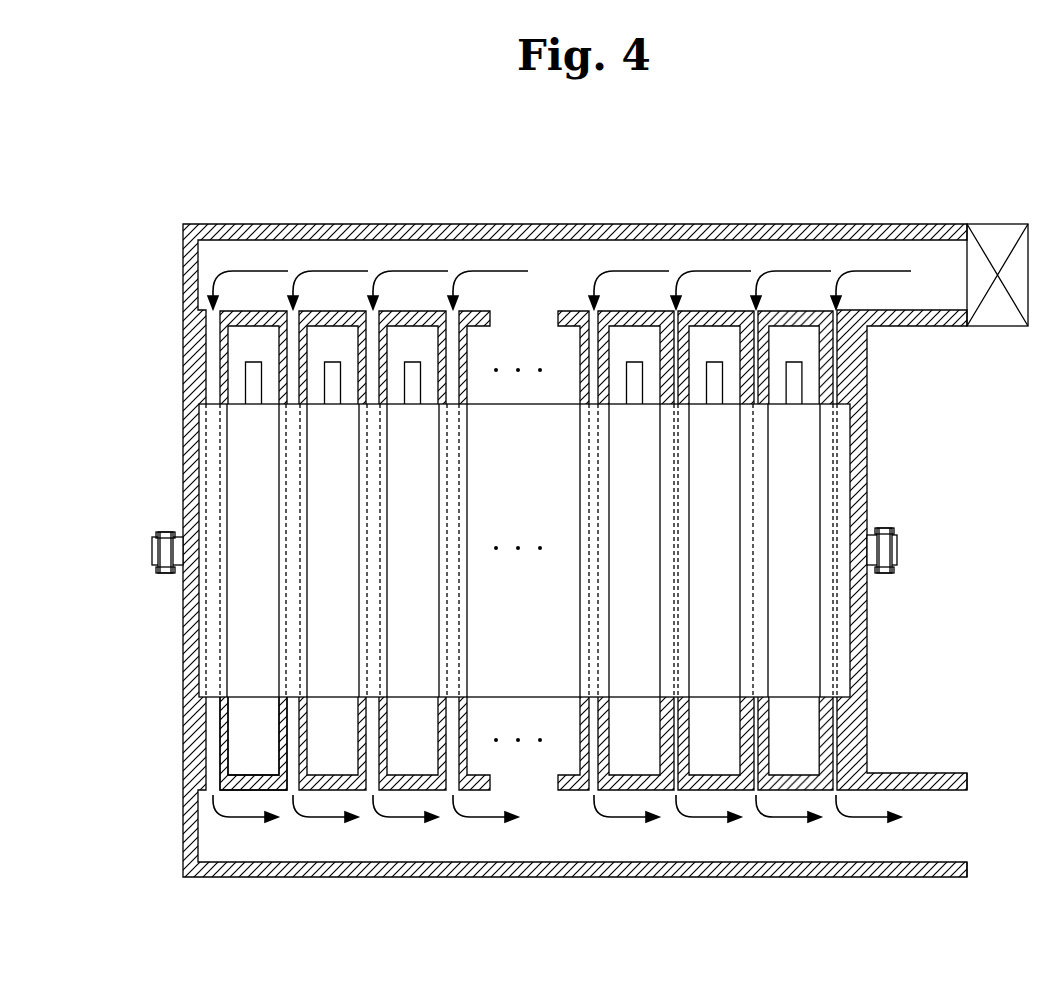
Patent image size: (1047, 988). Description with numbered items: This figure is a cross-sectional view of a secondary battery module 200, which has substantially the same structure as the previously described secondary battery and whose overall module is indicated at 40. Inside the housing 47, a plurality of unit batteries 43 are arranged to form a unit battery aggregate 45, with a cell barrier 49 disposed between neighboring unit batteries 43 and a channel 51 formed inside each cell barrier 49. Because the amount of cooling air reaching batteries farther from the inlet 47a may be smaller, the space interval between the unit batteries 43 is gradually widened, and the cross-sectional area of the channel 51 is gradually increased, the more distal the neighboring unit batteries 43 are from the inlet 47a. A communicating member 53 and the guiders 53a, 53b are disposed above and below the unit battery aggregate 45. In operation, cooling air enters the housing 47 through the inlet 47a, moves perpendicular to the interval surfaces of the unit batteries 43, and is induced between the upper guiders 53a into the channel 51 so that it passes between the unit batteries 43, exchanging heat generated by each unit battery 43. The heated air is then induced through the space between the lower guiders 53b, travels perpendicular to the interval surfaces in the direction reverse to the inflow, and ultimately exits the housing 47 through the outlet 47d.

The secondary battery module 200 is at (583, 133).
The battery module 40 is at (146, 386).
The unit battery 43 is at (238, 589).
The unit battery aggregate 45 is at (308, 467).
The housing 47 is at (592, 525).
The inlet 47a is at (967, 276).
The outlet 47d is at (967, 828).
The cell barrier 49 is at (282, 632).
The channel 51 is at (282, 505).
The communicating member 53 is at (267, 356).
The upper guider 53a is at (390, 350).
The lower guider 53b is at (277, 742).